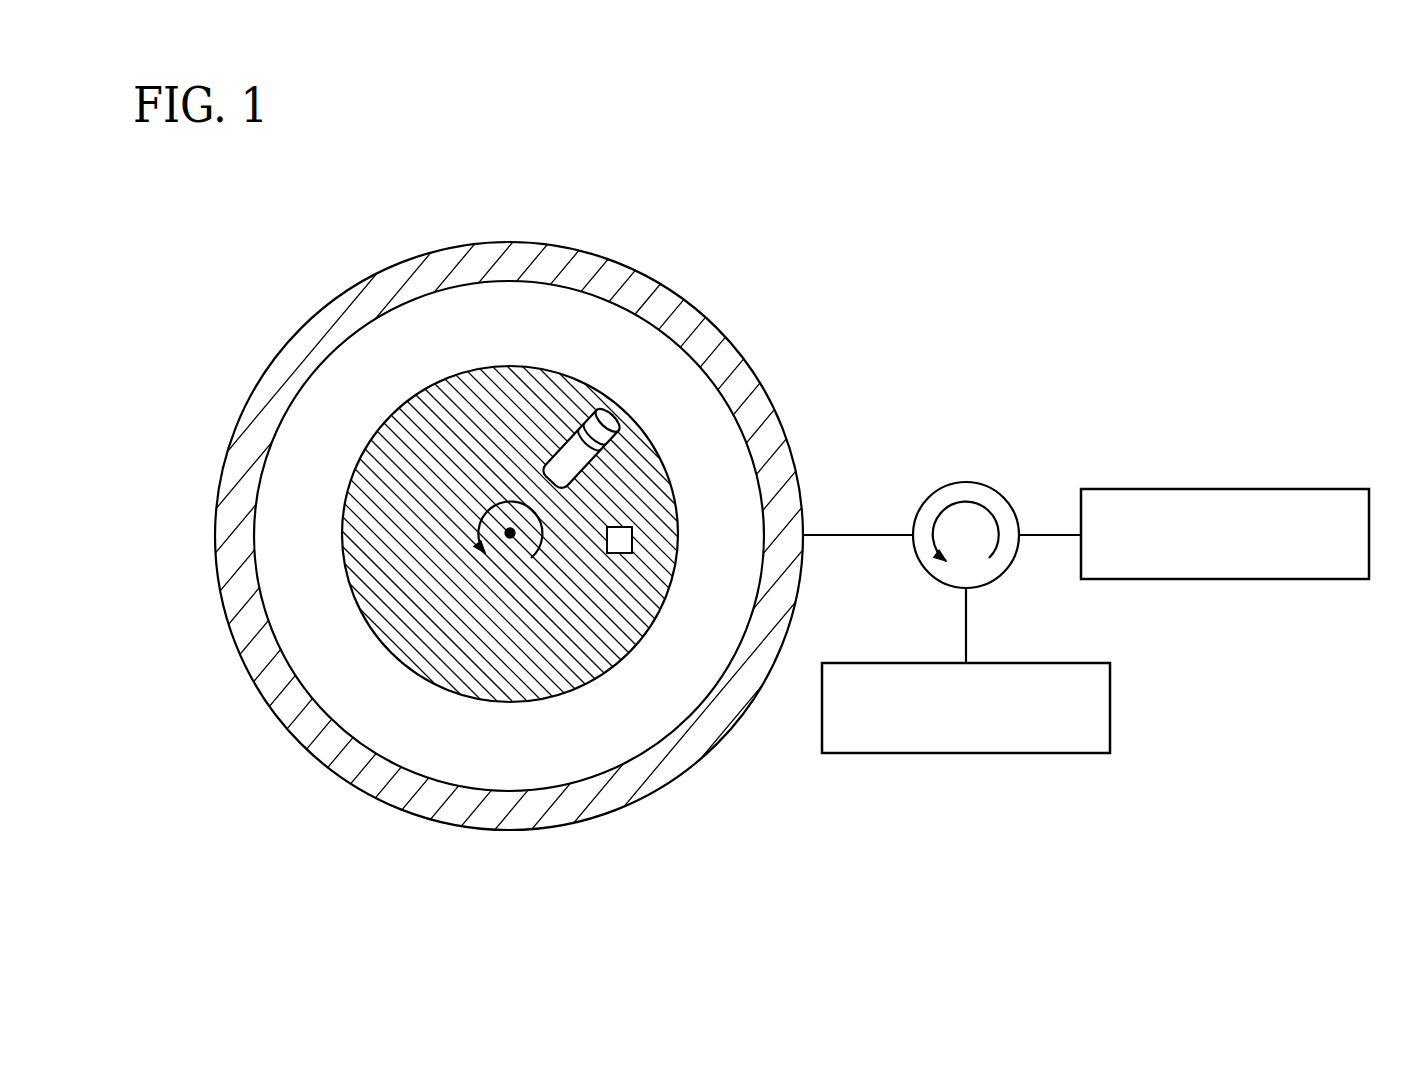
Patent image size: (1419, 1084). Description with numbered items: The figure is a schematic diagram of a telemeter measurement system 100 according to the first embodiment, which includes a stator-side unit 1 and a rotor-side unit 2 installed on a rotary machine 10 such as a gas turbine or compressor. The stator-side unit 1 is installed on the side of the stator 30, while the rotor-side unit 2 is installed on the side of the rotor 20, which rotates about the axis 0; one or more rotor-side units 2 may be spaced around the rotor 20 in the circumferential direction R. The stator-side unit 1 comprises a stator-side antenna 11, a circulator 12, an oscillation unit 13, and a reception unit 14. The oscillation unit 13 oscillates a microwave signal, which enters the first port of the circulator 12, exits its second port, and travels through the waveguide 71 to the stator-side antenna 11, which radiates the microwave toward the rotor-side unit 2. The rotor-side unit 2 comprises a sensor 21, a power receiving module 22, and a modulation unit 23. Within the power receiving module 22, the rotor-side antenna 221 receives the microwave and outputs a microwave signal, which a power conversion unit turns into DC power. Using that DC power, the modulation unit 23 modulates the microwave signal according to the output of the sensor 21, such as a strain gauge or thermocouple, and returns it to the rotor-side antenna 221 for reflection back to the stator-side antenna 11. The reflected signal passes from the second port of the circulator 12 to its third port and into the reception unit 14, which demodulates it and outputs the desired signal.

The telemeter measurement system 100 is at (1264, 218).
The stator-side unit 1 is at (1248, 742).
The rotary machine 10 is at (731, 817).
The stator 30 is at (620, 840).
The stator-side antenna 11 is at (715, 320).
The rotor 20 is at (443, 682).
The axis 0 is at (512, 540).
The circumferential direction R is at (481, 520).
The sensor 21 is at (633, 541).
The rotor-side unit 2 is at (628, 397).
The modulation unit 23 is at (556, 466).
The power receiving module 22 is at (588, 432).
The rotor-side antenna 221 is at (600, 442).
The waveguide 71 is at (848, 524).
The circulator 12 is at (966, 482).
The oscillation unit 13 is at (1232, 489).
The reception unit 14 is at (1111, 707).